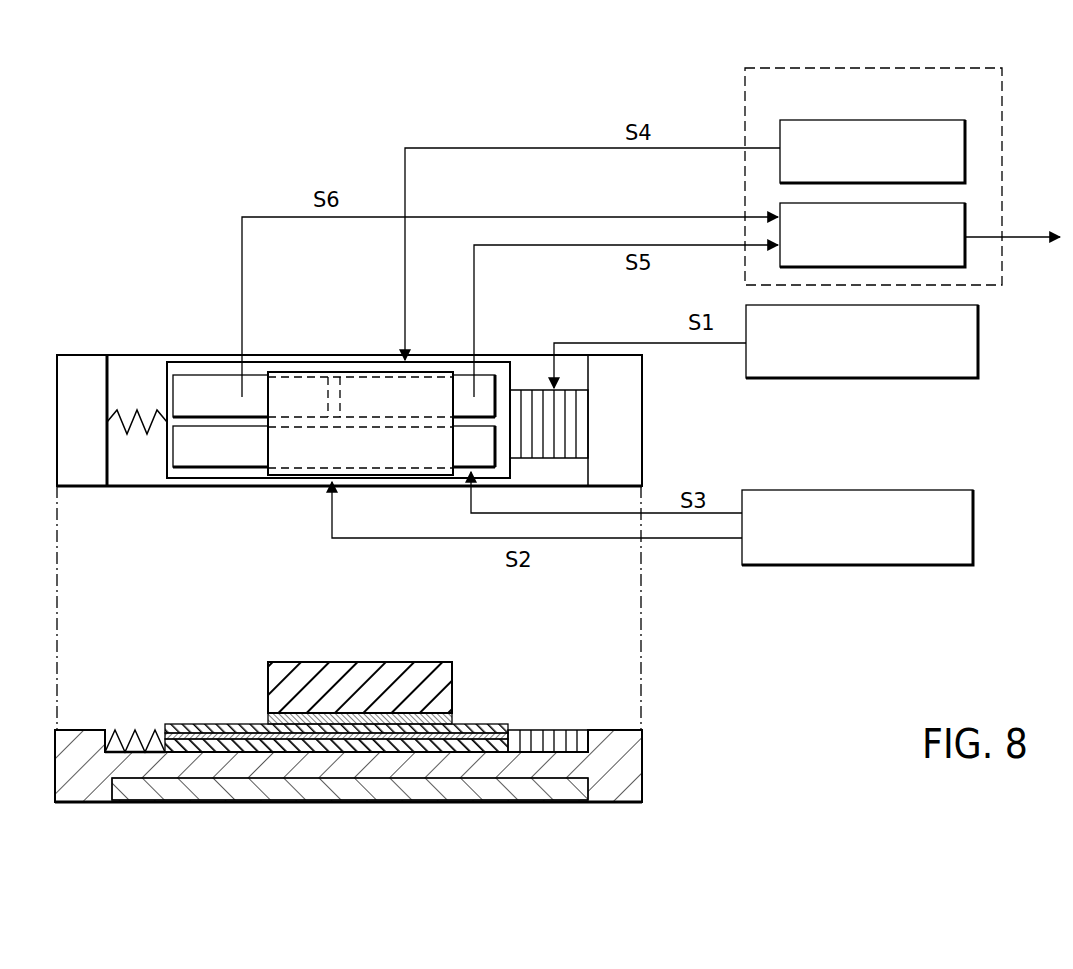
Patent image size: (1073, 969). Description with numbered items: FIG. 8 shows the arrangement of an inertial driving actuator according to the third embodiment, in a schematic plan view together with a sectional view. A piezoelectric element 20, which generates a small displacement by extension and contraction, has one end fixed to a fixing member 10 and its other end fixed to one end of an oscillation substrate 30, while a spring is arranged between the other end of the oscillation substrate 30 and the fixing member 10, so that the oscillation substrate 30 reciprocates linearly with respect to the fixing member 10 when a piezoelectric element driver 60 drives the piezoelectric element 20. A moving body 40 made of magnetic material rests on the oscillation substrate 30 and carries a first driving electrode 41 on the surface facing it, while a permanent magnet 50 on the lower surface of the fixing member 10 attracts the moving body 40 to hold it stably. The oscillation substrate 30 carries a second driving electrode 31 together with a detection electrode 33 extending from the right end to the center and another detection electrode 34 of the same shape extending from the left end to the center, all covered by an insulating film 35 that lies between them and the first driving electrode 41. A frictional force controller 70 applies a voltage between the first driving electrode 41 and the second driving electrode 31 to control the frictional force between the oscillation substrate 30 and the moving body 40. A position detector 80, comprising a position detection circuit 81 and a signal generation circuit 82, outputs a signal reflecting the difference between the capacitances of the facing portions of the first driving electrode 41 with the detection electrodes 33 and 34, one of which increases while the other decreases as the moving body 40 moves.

The fixing member 10 is at (84, 358).
The piezoelectric element 20 is at (565, 418).
The oscillation substrate 30 is at (176, 360).
The second driving electrode 31 is at (215, 458).
The detection electrode 33 is at (497, 362).
The detection electrode 34 is at (198, 362).
The insulating film 35 is at (175, 724).
The moving body 40 is at (326, 664).
The first driving electrode 41 is at (257, 360).
The permanent magnet 50 is at (184, 800).
The piezoelectric element driver 60 is at (978, 340).
The frictional force controller 70 is at (973, 525).
The position detector 80 is at (902, 148).
The position detection circuit 81 is at (965, 225).
The signal generation circuit 82 is at (965, 148).